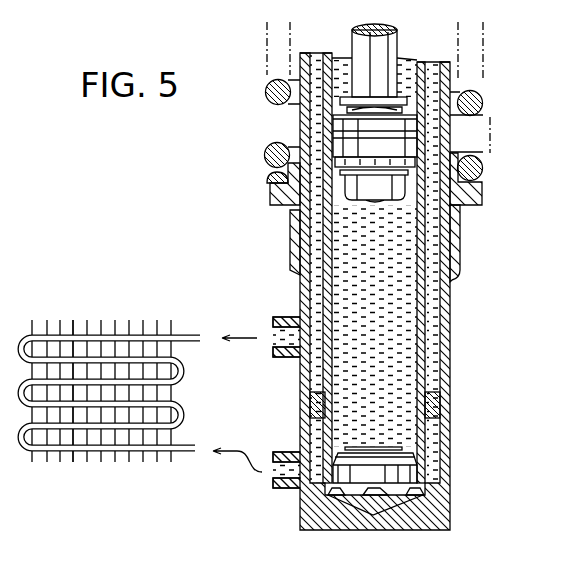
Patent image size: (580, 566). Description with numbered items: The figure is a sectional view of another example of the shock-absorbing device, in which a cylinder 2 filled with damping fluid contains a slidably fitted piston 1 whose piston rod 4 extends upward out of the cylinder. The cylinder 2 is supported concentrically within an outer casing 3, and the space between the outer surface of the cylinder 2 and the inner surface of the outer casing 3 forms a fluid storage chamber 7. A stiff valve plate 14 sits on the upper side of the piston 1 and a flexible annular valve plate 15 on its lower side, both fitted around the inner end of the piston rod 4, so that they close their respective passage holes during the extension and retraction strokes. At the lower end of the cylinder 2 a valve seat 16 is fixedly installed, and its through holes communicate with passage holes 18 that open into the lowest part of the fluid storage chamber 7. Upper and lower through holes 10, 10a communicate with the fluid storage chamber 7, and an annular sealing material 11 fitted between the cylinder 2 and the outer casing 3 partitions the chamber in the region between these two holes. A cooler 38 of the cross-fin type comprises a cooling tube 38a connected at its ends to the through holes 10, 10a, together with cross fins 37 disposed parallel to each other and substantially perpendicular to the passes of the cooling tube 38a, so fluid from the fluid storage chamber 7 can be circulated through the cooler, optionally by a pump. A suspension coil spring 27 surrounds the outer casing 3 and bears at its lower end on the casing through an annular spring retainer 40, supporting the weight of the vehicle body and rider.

The piston 1 is at (420, 124).
The cylinder 2 is at (421, 325).
The outer casing 3 is at (448, 292).
The piston rod 4 is at (387, 39).
The fluid storage chamber 7 is at (298, 233).
The upper through hole 10 is at (277, 333).
The lower through hole 10a is at (270, 475).
The annular sealing material 11 is at (433, 402).
The valve plate 14 is at (408, 103).
The annular valve plate 15 is at (420, 160).
The valve seat 16 is at (414, 470).
The passage holes 18 is at (412, 493).
The suspension coil spring 27 is at (266, 90).
The cross fins 37 is at (88, 452).
The cooler 38 is at (108, 322).
The cooling tube 38a is at (68, 332).
The annular spring retainer 40 is at (278, 193).